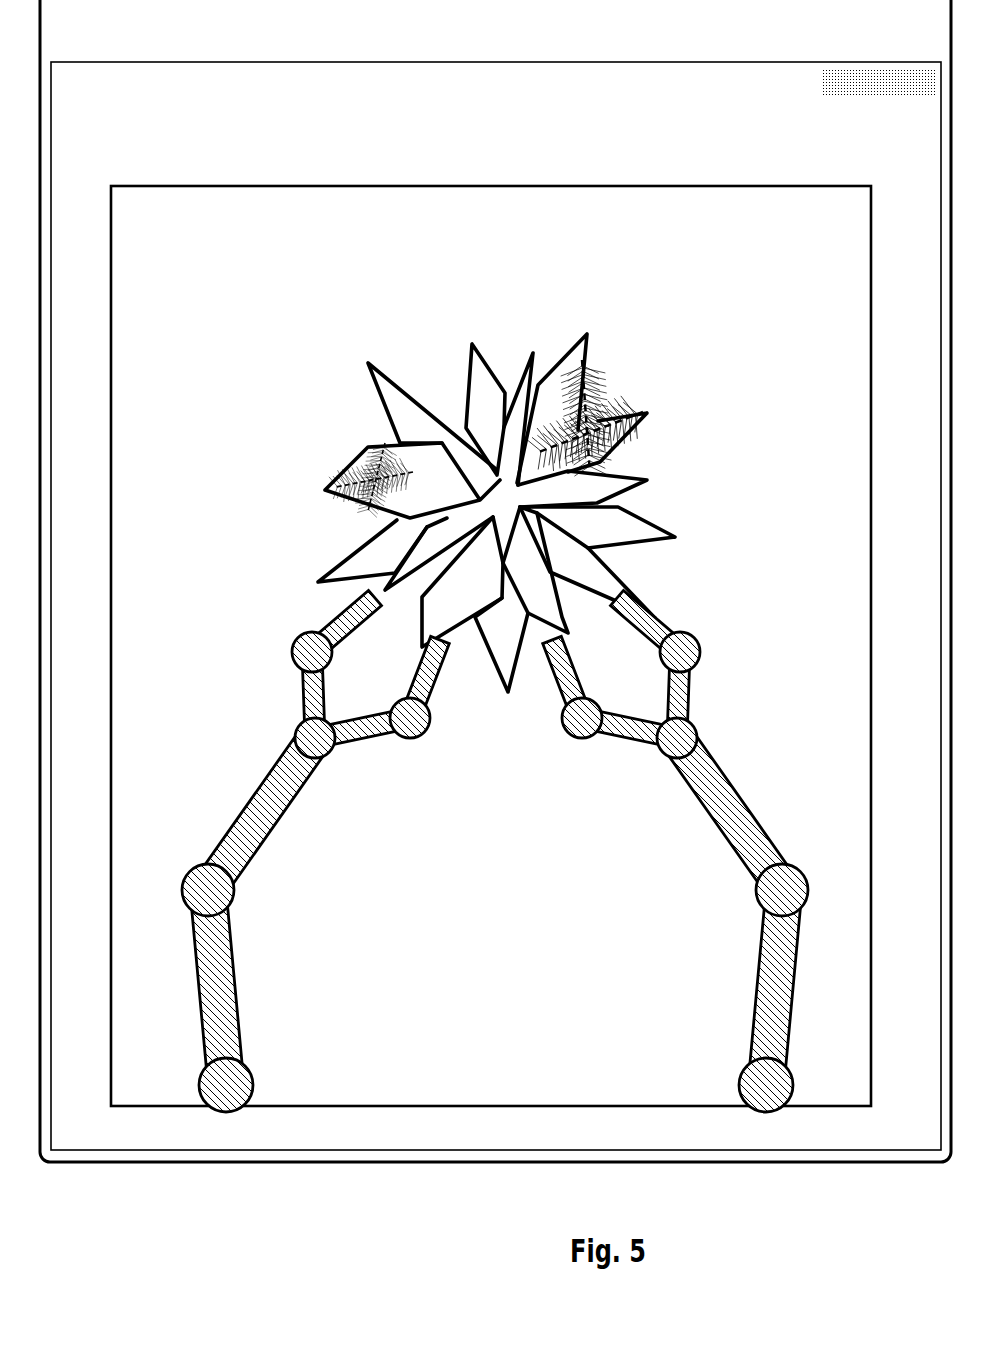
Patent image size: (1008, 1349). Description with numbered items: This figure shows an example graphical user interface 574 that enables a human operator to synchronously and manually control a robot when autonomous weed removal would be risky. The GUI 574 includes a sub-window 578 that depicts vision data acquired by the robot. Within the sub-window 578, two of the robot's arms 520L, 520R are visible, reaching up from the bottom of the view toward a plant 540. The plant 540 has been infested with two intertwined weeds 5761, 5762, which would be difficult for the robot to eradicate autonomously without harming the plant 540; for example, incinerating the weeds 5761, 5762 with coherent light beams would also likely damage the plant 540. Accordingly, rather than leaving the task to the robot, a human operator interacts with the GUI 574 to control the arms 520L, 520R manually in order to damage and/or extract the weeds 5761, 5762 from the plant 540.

The graphical user interface 574 is at (824, 1214).
The sub-window 578 is at (285, 1107).
The plant 540 is at (242, 336).
The weed 5761 is at (637, 396).
The weed 5762 is at (328, 466).
The left robot arm 520L is at (238, 875).
The right robot arm 520R is at (787, 982).